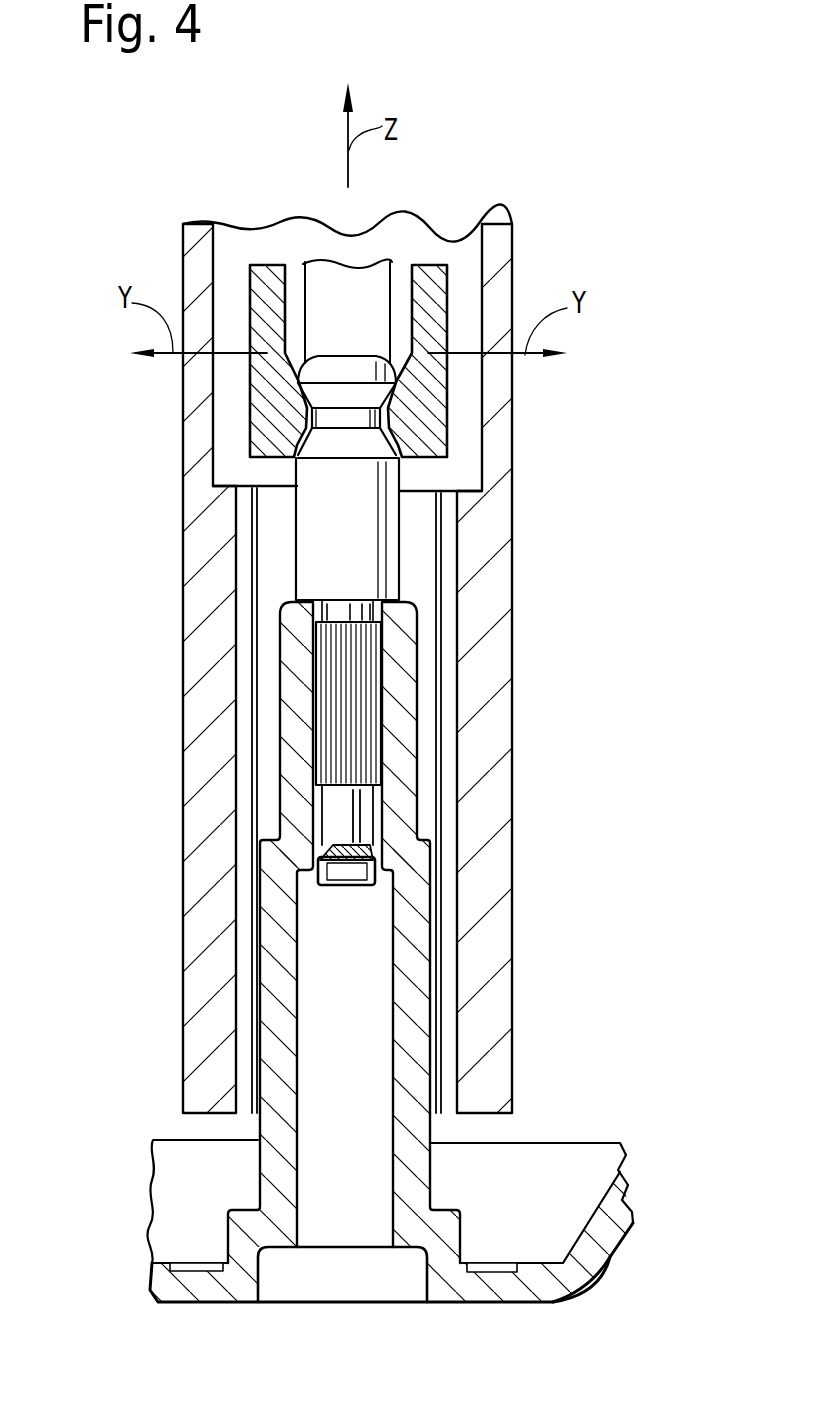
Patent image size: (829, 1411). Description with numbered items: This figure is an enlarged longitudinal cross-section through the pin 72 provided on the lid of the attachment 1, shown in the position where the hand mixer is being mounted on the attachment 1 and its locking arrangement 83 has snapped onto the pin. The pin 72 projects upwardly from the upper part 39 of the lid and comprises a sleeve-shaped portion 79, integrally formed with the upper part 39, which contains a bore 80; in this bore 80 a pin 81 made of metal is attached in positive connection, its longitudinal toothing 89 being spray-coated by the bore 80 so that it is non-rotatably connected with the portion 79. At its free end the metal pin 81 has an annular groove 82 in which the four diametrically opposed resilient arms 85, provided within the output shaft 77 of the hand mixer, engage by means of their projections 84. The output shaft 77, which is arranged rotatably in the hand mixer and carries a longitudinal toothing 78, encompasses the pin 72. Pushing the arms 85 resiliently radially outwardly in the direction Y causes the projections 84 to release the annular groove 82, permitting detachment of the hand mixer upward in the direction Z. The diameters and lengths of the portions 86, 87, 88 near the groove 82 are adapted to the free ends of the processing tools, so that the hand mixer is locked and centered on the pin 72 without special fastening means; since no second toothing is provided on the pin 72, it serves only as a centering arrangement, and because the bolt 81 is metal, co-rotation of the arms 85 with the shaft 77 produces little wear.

The attachment 1 is at (122, 1212).
The upper part 39 is at (603, 1237).
The pin 72 is at (248, 880).
The output shaft 77 is at (203, 773).
The longitudinal toothing 78 is at (450, 952).
The sleeve-shaped portion 79 is at (277, 962).
The bore 80 is at (383, 843).
The pin made of metal 81 is at (323, 558).
The annular groove 82 is at (342, 422).
The locking arrangement 83 is at (296, 417).
The projections 84 is at (428, 290).
The resilient arms 85 is at (400, 417).
The portion 86 is at (403, 518).
The portion 87 is at (417, 792).
The portion 88 is at (430, 1172).
The longitudinal toothing 89 is at (333, 656).